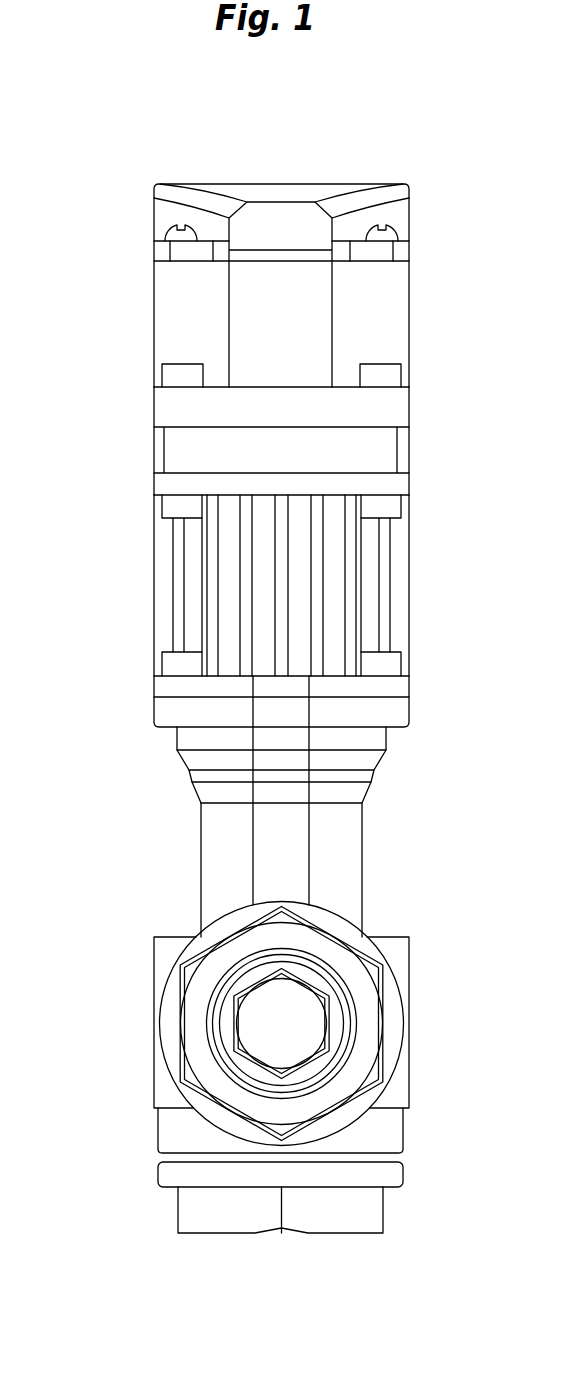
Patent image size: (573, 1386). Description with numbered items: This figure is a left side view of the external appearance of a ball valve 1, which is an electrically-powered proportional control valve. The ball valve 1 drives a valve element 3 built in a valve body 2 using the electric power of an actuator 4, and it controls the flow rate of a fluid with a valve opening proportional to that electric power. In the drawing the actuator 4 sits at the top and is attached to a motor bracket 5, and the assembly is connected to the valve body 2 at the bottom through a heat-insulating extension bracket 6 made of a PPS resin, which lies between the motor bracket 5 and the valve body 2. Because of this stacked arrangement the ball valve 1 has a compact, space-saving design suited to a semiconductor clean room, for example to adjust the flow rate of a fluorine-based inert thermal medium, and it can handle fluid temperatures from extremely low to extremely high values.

The ball valve 1 is at (106, 848).
The valve body 2 is at (409, 1022).
The valve element 3 is at (309, 862).
The actuator 4 is at (409, 302).
The motor bracket 5 is at (409, 448).
The heat-insulating extension bracket 6 is at (409, 595).